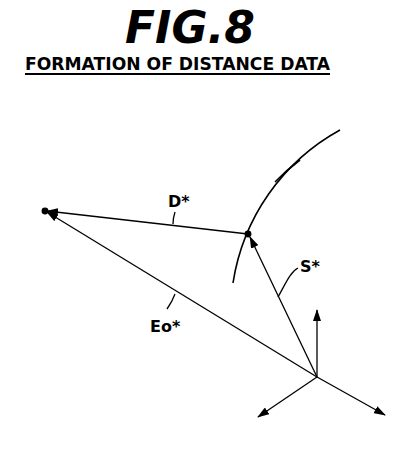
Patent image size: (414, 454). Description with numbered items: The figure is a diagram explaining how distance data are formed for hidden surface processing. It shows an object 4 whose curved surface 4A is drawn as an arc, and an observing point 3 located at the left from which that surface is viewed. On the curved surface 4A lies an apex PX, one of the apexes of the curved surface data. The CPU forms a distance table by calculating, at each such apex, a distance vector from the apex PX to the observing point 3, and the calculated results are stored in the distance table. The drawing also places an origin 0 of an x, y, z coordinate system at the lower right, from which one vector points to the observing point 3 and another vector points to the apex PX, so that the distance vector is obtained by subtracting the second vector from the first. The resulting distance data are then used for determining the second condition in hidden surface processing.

The observing point 3 is at (46, 208).
The object 4 is at (322, 143).
The curved surface 4A is at (286, 165).
The apex PX is at (253, 234).
The coordinate origin 0 is at (319, 376).